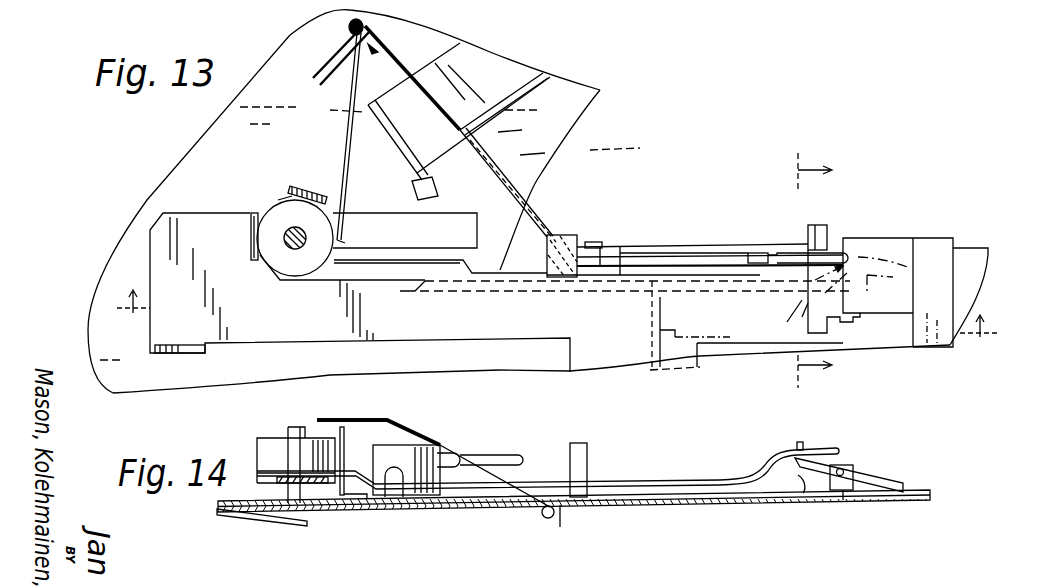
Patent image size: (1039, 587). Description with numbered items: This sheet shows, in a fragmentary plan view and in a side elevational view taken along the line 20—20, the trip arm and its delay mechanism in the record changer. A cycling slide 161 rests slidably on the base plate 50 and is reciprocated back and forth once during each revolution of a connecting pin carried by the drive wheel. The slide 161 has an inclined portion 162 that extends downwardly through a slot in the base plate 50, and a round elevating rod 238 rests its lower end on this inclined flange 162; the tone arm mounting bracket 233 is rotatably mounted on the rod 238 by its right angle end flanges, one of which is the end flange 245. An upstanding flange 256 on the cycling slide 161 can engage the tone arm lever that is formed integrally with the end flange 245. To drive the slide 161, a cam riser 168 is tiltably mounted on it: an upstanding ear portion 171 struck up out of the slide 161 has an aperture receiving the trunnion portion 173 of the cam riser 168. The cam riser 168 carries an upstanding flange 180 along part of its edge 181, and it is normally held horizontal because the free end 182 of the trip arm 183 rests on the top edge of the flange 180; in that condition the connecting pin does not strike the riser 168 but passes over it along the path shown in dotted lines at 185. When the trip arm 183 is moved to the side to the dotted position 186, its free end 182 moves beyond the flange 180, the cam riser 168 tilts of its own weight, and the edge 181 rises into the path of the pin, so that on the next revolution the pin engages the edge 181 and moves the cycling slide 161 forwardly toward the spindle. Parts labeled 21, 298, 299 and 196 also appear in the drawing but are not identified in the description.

In FIG. 13, the base plate 50 is at (218, 137).
In FIG. 14, the base plate 50 is at (773, 502).
In FIG. 13, the top lever hood 21 is at (617, 342).
In FIG. 13, the tone arm mounting bracket 233 is at (298, 188).
In FIG. 13, the right angle end flange 245 is at (292, 196).
In FIG. 14, the right angle end flange 245 is at (328, 484).
In FIG. 13, the connecting rod 299 is at (343, 202).
In FIG. 13, the slide plate 298 is at (340, 239).
In FIG. 13, the round elevating rod 238 is at (293, 248).
In FIG. 14, the round elevating rod 238 is at (288, 428).
In FIG. 13, the line 20— 20 is at (555, 313).
In FIG. 13, the upstanding flange 256 is at (170, 343).
In FIG. 13, the cycling slide 161 is at (625, 250).
In FIG. 14, the cycling slide 161 is at (785, 480).
In FIG. 13, the trip arm 183 is at (665, 263).
In FIG. 14, the trip arm 183 is at (663, 482).
In FIG. 13, the free end 182 is at (787, 258).
In FIG. 14, the free end 182 is at (785, 450).
In FIG. 13, the upstanding flange 180 is at (818, 225).
In FIG. 13, the cam riser 168 is at (888, 254).
In FIG. 14, the cam riser 168 is at (868, 477).
In FIG. 13, the path of the connecting pin 185 is at (864, 281).
In FIG. 13, the side position of the trip arm 186 is at (687, 292).
In FIG. 13, the edge of the cam riser 181 is at (776, 322).
In FIG. 13, the upstanding ear portion 171 is at (852, 329).
In FIG. 14, the upstanding ear portion 171 is at (845, 490).
In FIG. 13, the section line 19b 196 is at (784, 271).
In FIG. 14, the inclined portion 162 is at (283, 521).
In FIG. 14, the trunnion portion 173 is at (843, 467).